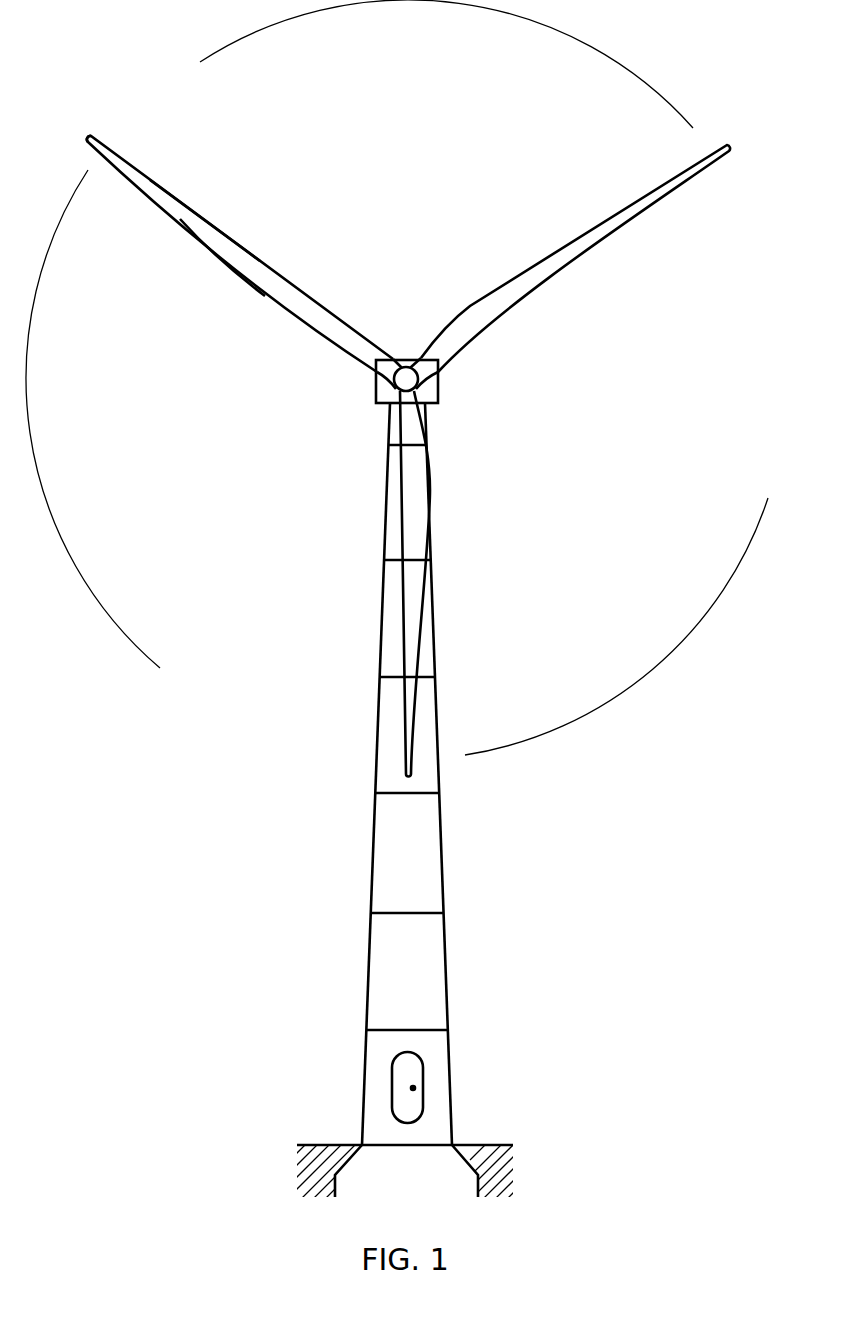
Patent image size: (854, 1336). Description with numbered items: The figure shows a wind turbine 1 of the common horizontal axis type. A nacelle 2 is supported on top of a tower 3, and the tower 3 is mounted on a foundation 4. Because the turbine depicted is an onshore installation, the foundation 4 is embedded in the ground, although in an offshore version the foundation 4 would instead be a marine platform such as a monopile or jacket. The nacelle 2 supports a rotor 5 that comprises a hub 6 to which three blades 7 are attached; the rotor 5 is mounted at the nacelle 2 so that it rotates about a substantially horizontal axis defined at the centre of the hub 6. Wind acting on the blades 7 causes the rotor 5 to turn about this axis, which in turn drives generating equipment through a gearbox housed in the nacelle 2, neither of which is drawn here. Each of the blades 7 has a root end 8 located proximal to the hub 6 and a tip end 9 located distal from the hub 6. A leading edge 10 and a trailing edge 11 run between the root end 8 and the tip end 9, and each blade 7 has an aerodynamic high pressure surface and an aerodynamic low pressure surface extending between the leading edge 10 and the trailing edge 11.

The wind turbine 1 is at (397, 600).
The nacelle 2 is at (430, 388).
The tower 3 is at (430, 862).
The foundation 4 is at (423, 1172).
The rotor 5 is at (397, 388).
The hub 6 is at (406, 381).
The blade 7 is at (408, 423).
The root end 8 is at (358, 384).
The tip end 9 is at (114, 137).
The leading edge 10 is at (233, 240).
The trailing edge 11 is at (250, 286).